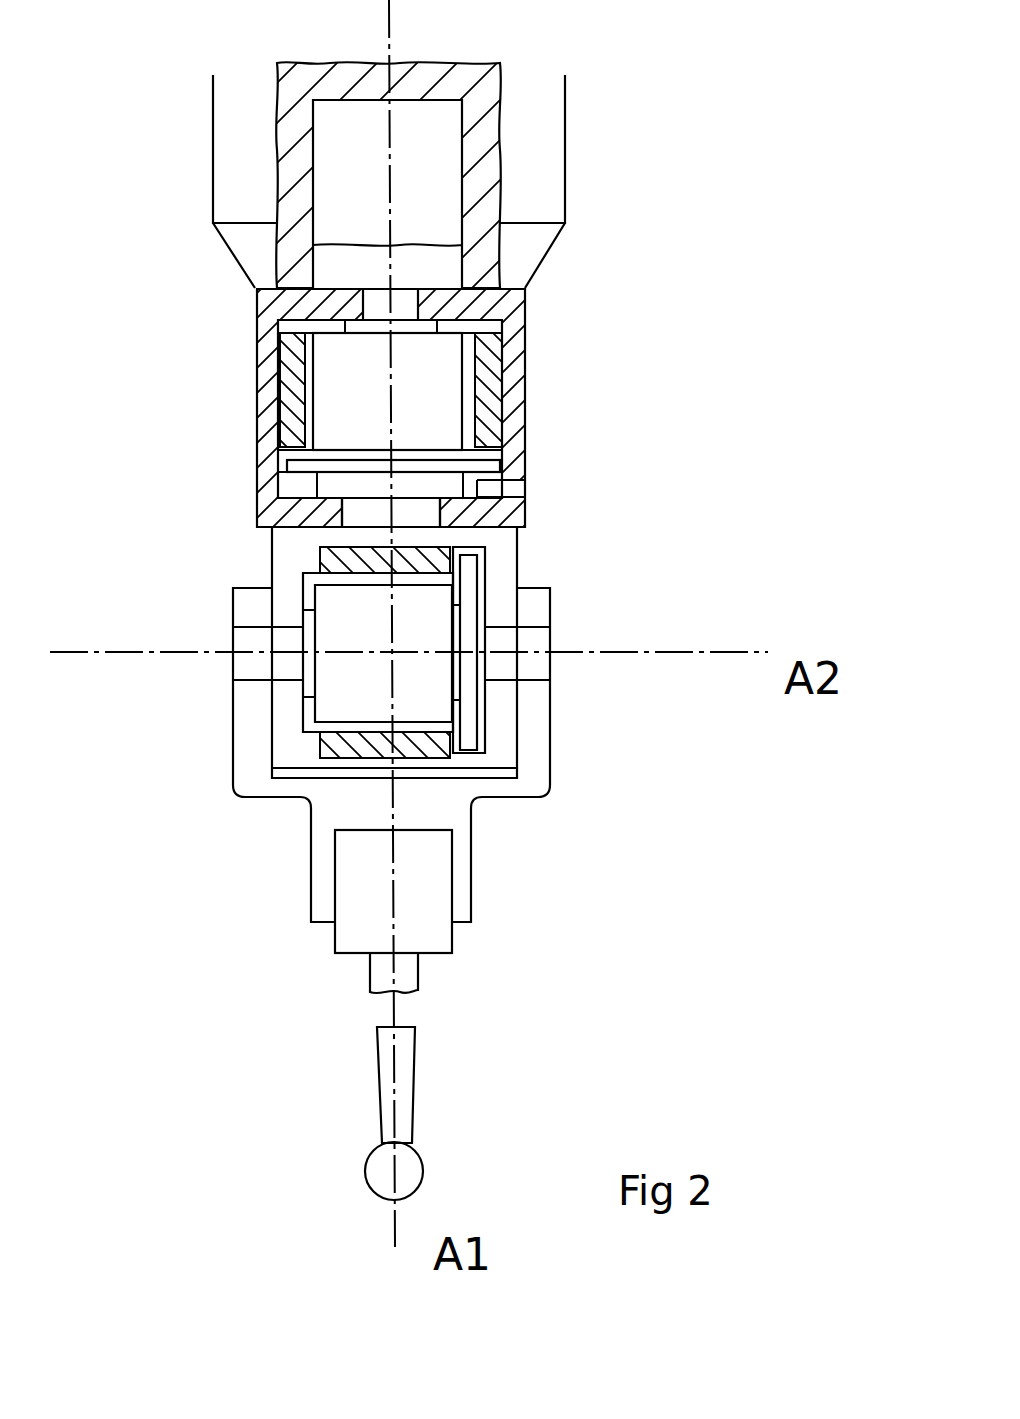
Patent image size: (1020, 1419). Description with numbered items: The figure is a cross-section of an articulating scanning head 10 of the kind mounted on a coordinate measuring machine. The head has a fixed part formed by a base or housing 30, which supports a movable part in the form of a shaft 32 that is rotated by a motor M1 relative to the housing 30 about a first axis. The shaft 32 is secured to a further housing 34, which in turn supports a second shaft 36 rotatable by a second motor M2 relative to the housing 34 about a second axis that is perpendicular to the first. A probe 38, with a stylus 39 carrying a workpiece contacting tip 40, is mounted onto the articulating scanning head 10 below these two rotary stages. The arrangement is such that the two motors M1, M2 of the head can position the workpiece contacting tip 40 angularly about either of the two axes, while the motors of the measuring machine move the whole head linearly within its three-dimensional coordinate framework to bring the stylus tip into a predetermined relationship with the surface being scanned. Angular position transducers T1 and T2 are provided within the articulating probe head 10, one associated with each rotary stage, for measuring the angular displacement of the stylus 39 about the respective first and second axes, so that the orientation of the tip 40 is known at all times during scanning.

The articulating scanning head 10 is at (677, 336).
The housing 30 is at (257, 400).
The motor M1 is at (440, 390).
The angular position transducer T1 is at (290, 465).
The shaft 32 is at (367, 512).
The further housing 34 is at (521, 548).
The motor M2 is at (353, 697).
The angular position transducer T2 is at (467, 733).
The shaft 36 is at (505, 682).
The probe 38 is at (452, 877).
The stylus 39 is at (415, 1085).
The workpiece contacting tip 40 is at (365, 1172).